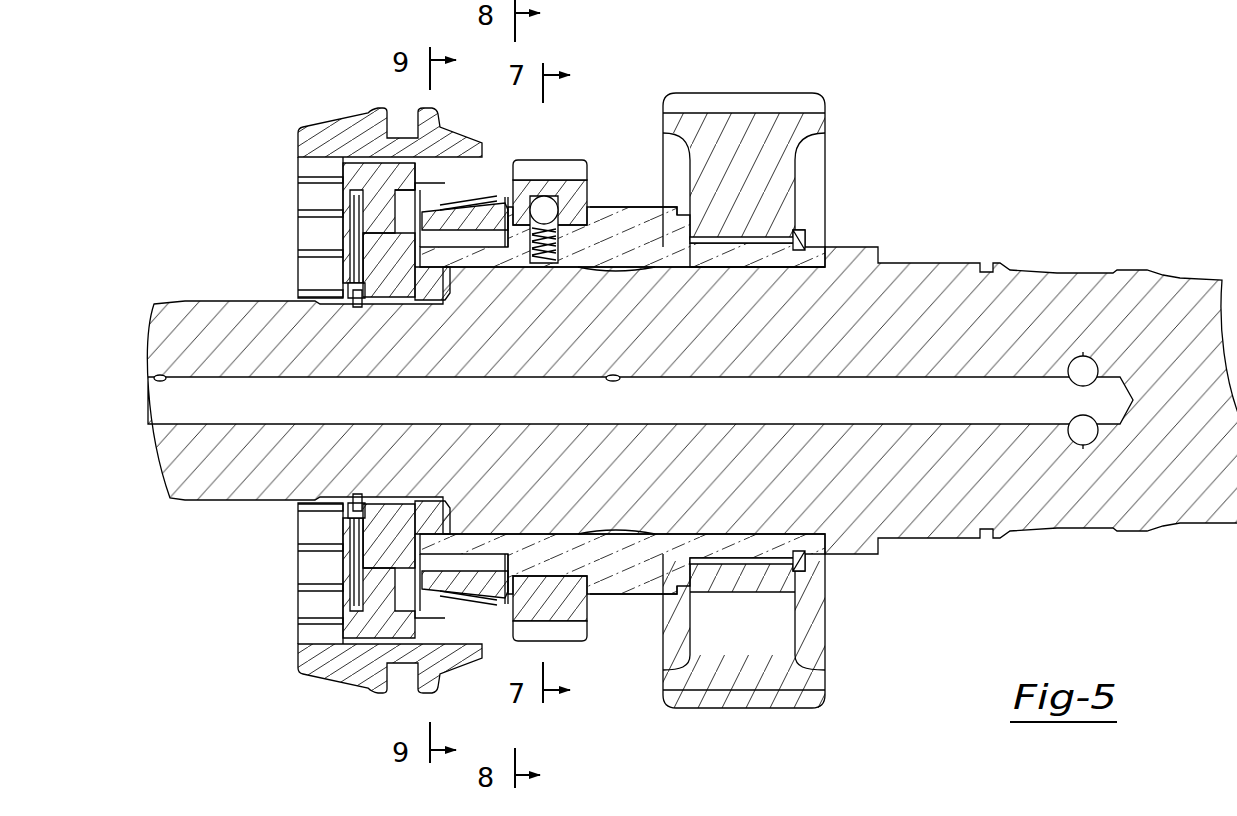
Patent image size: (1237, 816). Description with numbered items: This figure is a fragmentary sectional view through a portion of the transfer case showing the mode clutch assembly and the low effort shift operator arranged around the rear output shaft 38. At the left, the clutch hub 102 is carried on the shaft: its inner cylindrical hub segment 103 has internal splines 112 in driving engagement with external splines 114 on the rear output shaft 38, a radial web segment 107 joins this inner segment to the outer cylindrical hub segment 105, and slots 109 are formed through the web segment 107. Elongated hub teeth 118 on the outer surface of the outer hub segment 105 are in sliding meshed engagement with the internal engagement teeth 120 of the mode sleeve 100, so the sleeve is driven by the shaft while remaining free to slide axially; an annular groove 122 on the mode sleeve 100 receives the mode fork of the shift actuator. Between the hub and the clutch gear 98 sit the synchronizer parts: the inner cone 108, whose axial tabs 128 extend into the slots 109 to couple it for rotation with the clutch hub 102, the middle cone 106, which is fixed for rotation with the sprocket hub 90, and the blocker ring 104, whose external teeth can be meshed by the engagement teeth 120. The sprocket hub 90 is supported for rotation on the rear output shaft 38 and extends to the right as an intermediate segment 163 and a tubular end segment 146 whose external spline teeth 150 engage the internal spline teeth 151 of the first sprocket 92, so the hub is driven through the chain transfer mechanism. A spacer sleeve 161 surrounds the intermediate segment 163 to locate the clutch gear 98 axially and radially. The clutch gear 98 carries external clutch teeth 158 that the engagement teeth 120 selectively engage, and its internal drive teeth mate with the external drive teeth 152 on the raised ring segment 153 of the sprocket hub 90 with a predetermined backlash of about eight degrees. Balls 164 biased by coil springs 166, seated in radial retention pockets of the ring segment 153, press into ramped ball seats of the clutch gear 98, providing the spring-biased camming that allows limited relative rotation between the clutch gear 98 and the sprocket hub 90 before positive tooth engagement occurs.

The rear output shaft 38 is at (936, 318).
The sprocket hub 90 is at (605, 244).
The first sprocket 92 is at (791, 133).
The clutch gear 98 is at (560, 160).
The mode sleeve 100 is at (318, 130).
The clutch hub 102 is at (383, 180).
The inner cylindrical hub segment 103 is at (388, 290).
The blocker ring 104 is at (437, 190).
The outer cylindrical hub segment 105 is at (355, 630).
The middle cone 106 is at (464, 202).
The web segment 107 is at (377, 217).
The inner cone 108 is at (480, 220).
The slots 109 is at (375, 588).
The internal splines 112 is at (415, 272).
The external splines 114 is at (412, 520).
The hub teeth 118 is at (452, 640).
The engagement teeth 120 is at (320, 161).
The annular groove 122 is at (412, 662).
The tabs 128 is at (395, 575).
The tubular end segment 146 is at (752, 262).
The external spline teeth 150 is at (793, 238).
The internal spline teeth 151 is at (737, 563).
The external drive teeth 152 is at (553, 606).
The raised ring segment 153 is at (575, 580).
The external clutch teeth 158 is at (577, 170).
The spacer sleeve 161 is at (643, 214).
The intermediate segment 163 is at (622, 555).
The balls 164 is at (544, 210).
The coil springs 166 is at (544, 250).